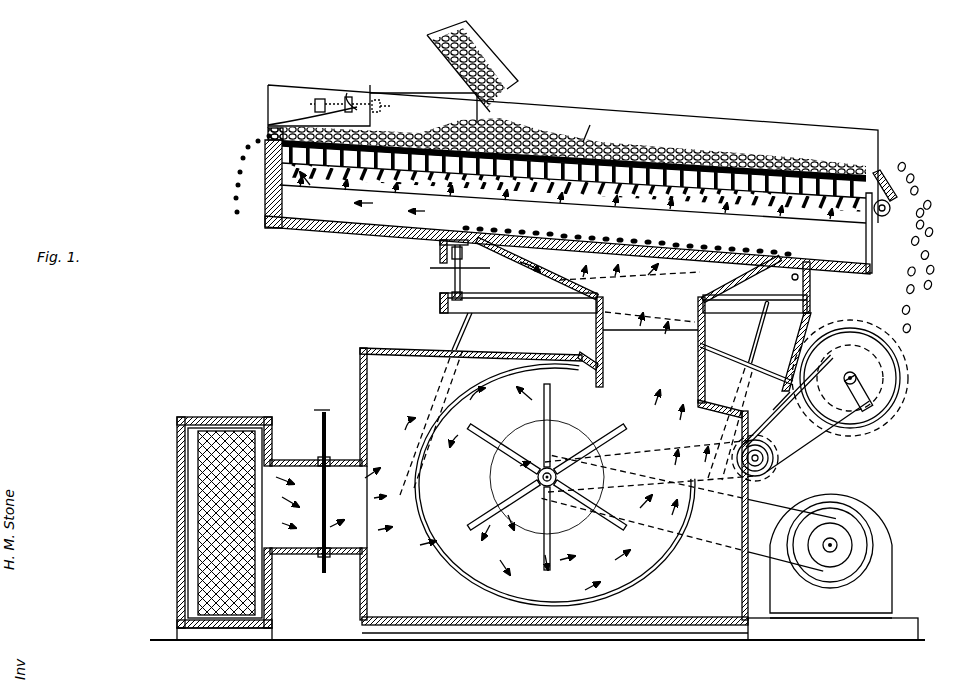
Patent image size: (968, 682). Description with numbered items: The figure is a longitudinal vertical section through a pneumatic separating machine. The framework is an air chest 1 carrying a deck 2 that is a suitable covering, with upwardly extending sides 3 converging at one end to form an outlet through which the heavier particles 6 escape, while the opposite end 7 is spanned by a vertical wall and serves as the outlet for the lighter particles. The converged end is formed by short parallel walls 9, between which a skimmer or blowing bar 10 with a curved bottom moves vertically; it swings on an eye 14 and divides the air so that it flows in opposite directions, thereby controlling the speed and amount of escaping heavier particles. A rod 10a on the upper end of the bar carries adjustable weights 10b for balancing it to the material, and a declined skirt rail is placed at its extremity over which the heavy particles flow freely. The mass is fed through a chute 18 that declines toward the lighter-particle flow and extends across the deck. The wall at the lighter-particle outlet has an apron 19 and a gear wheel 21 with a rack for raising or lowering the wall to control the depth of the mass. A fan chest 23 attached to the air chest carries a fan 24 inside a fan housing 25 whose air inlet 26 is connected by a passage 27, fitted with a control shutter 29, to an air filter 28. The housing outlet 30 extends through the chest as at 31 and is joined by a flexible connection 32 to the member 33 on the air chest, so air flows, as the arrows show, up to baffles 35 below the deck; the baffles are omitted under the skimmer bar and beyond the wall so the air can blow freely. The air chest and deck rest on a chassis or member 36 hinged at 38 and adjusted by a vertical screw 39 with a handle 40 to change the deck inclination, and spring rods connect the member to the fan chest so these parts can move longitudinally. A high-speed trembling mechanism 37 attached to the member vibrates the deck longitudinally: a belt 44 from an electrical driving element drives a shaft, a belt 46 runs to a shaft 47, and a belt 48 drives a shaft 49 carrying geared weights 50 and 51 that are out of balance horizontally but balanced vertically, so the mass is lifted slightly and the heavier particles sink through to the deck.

The air chest 1 is at (863, 248).
The deck 2 is at (637, 143).
The upwardly extending sides 3 is at (693, 117).
The heavier particles 6 is at (356, 107).
The opposite end of the deck 7 is at (880, 140).
The short parallel walls 9 is at (275, 95).
The skimmer bar 10 is at (268, 125).
The rod 10a is at (313, 105).
The weights 10b is at (347, 97).
The eye 14 is at (353, 102).
The chute 18 is at (490, 62).
The apron 19 is at (917, 192).
The gear wheel 21 is at (897, 207).
The fan chest 23 is at (407, 348).
The fan 24 is at (552, 412).
The fan housing 25 is at (432, 528).
The air inlet 26 is at (365, 513).
The passage 27 is at (316, 507).
The air filter 28 is at (222, 432).
The control shutter 29 is at (322, 431).
The outlet of fan housing 30 is at (602, 342).
The outlet extension 31 is at (603, 387).
The flexible connection 32 is at (710, 342).
The member 33 is at (530, 267).
The baffles 35 is at (523, 181).
The chassis or member 36 is at (440, 303).
The high-speed longitudinally vibrating mechanism 37 is at (905, 385).
The hinge 38 is at (799, 278).
The vertical screw 39 is at (455, 281).
The handle 40 is at (444, 267).
The belt 44 is at (770, 490).
The belt 46 is at (597, 442).
The shaft 47 is at (777, 466).
The belt 48 is at (773, 410).
The shaft 49 is at (806, 413).
The weight 50 is at (908, 350).
The weight 51 is at (873, 403).